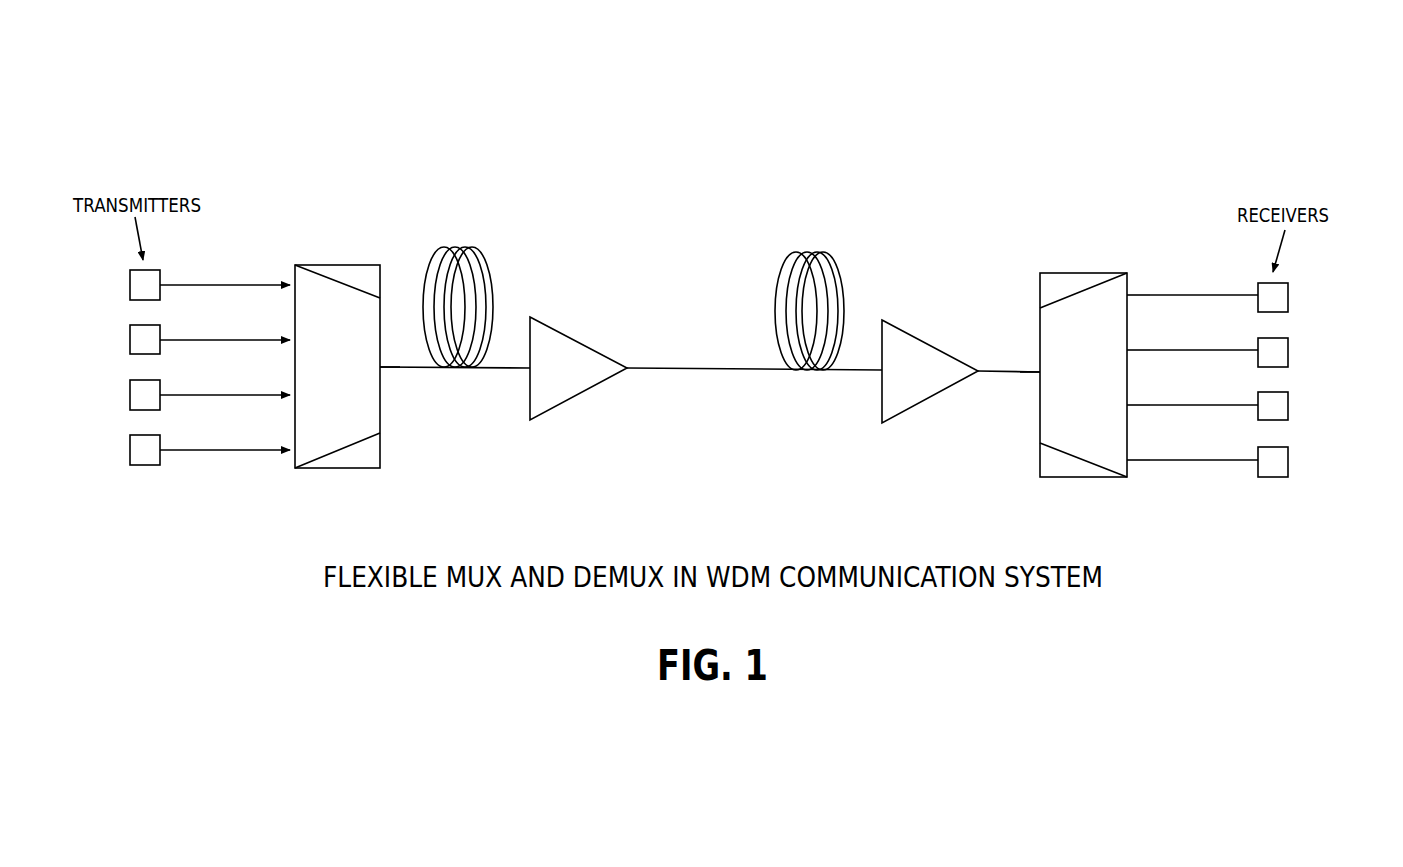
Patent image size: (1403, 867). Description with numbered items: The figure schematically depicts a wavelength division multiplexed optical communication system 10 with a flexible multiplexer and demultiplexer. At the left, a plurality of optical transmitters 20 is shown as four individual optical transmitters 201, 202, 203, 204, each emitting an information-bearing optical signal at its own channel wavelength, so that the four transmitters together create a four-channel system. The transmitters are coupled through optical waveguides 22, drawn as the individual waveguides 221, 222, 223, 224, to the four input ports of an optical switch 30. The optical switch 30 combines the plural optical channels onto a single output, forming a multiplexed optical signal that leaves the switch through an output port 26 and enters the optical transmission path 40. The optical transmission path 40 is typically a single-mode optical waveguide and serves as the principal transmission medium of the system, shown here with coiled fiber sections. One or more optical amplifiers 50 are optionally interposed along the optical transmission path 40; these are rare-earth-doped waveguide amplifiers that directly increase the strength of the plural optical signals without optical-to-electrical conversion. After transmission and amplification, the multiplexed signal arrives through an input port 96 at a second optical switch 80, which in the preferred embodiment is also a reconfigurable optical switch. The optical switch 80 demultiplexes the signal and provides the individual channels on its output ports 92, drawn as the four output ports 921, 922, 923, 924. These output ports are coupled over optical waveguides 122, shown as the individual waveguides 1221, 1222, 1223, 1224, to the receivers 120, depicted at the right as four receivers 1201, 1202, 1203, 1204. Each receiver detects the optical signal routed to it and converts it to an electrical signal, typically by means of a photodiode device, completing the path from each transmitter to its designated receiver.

The wavelength division multiplexed optical communication system 10 is at (520, 142).
The optical transmitters 20 is at (109, 367).
The optical transmitter 201 is at (130, 283).
The optical transmitter 202 is at (130, 338).
The optical transmitter 203 is at (130, 393).
The optical transmitter 204 is at (130, 449).
The optical waveguides 22 is at (225, 372).
The optical waveguide 221 is at (232, 283).
The optical waveguide 222 is at (253, 338).
The optical waveguide 223 is at (253, 393).
The optical waveguide 224 is at (232, 452).
The optical switch 30 is at (340, 264).
The output port 26 is at (388, 369).
The optical transmission path 40 is at (417, 369).
The optical amplifiers 50 is at (573, 340).
The input port 96 is at (1040, 373).
The optical switch 80 is at (1085, 272).
The output ports 92 is at (1164, 375).
The output port 921 is at (1128, 293).
The output port 922 is at (1128, 350).
The output port 923 is at (1128, 406).
The output port 924 is at (1128, 462).
The optical waveguides 122 is at (1204, 382).
The optical waveguide 1221 is at (1235, 293).
The optical waveguide 1222 is at (1160, 348).
The optical waveguide 1223 is at (1240, 403).
The optical waveguide 1224 is at (1225, 463).
The receivers 120 is at (1319, 381).
The receiver 1201 is at (1288, 296).
The receiver 1202 is at (1288, 351).
The receiver 1203 is at (1288, 406).
The receiver 1204 is at (1288, 461).